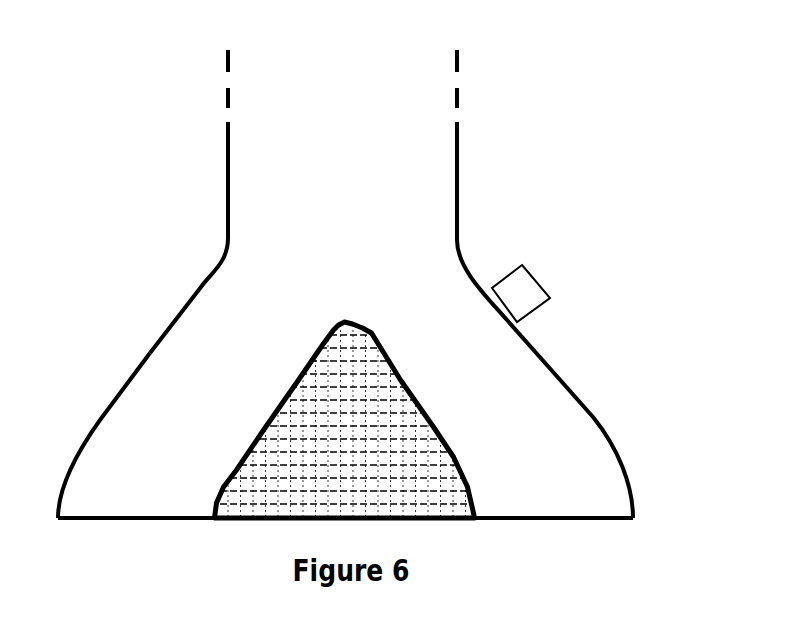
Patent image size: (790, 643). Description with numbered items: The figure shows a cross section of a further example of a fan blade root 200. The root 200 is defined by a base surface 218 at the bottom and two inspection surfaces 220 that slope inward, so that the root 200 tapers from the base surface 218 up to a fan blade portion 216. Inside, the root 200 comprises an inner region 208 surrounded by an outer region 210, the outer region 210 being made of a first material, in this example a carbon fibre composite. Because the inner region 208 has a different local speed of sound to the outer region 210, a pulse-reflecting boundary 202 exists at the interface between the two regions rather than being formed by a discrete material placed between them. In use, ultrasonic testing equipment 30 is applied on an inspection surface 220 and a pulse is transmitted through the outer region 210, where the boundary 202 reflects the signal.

The fan blade root 200 is at (379, 324).
The fan blade portion 216 is at (432, 148).
The inspection surfaces 220 is at (190, 300).
The outer region 210 is at (143, 392).
The base surface 218 is at (138, 518).
The inner region 208 is at (413, 500).
The pulse-reflecting boundary 202 is at (480, 463).
The ultrasonic testing equipment 30 is at (518, 292).